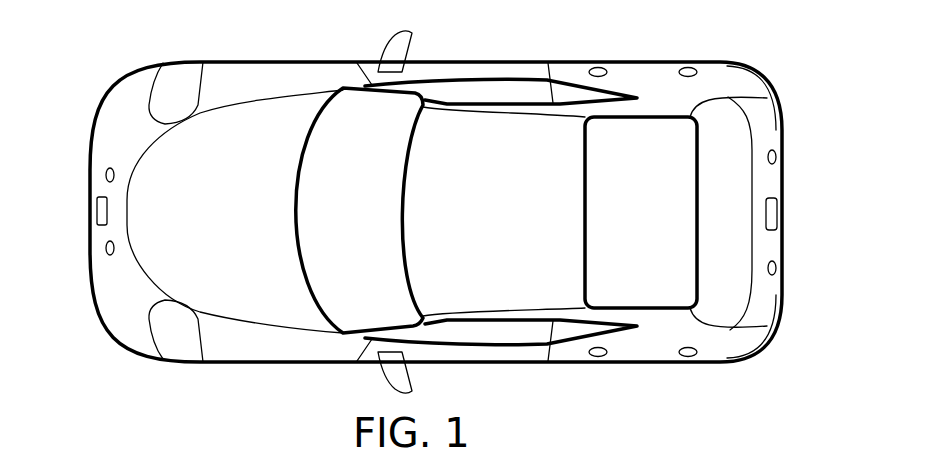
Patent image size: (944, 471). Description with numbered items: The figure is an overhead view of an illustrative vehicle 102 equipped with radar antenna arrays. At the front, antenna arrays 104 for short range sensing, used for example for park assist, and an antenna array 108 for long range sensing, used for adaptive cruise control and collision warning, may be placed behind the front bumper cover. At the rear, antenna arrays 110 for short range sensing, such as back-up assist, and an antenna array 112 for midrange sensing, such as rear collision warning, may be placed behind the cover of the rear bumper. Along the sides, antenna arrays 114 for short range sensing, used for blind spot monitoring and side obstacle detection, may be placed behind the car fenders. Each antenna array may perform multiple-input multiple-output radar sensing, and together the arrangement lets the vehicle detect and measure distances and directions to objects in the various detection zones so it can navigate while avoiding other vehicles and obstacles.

The vehicle 102 is at (307, 363).
The antenna arrays for short range sensing 104 is at (105, 175).
The antenna array for long range sensing 108 is at (106, 245).
The antenna arrays for short range sensing 110 is at (778, 160).
The antenna array for midrange sensing 112 is at (778, 213).
The antenna arrays for short range sensing 114 is at (688, 62).